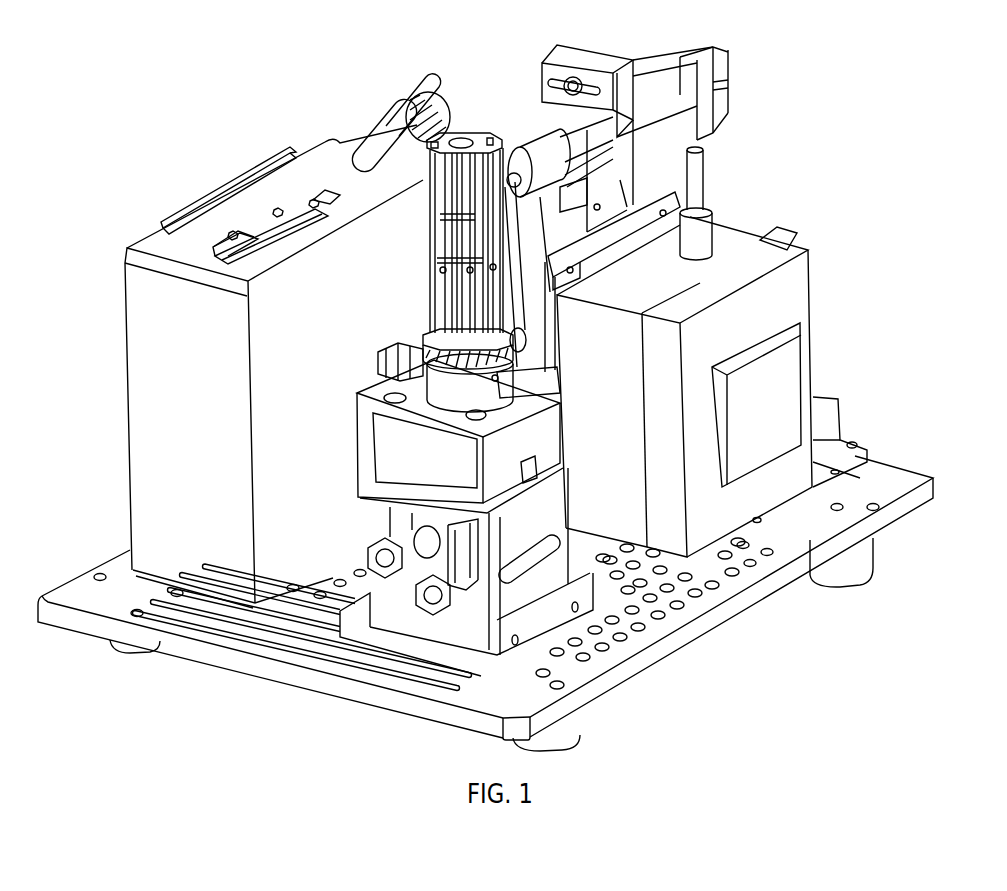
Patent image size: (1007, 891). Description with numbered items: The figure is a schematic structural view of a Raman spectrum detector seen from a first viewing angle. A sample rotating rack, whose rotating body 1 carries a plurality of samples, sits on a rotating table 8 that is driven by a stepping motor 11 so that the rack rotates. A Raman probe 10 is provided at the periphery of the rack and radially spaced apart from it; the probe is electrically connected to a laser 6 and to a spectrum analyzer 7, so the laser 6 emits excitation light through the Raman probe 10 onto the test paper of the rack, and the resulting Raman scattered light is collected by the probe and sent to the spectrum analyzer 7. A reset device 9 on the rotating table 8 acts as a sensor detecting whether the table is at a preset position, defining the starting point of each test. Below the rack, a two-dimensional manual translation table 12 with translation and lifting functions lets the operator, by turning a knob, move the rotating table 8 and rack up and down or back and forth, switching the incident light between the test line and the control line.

The rotating body 1 is at (553, 397).
The laser 6 is at (813, 290).
The spectrum analyzer 7 is at (327, 163).
The rotating table 8 is at (453, 382).
The reset device 9 is at (380, 355).
The Raman probe 10 is at (533, 157).
The stepping motor 11 is at (527, 478).
The two-dimensional manual translation table 12 is at (513, 538).